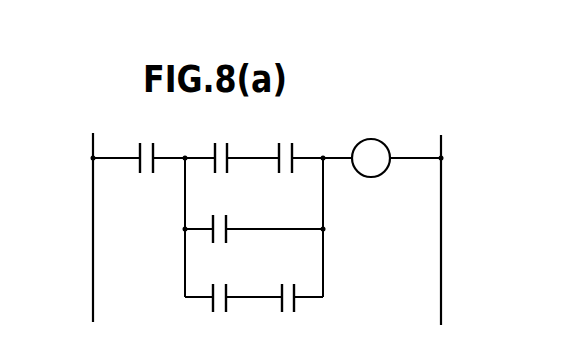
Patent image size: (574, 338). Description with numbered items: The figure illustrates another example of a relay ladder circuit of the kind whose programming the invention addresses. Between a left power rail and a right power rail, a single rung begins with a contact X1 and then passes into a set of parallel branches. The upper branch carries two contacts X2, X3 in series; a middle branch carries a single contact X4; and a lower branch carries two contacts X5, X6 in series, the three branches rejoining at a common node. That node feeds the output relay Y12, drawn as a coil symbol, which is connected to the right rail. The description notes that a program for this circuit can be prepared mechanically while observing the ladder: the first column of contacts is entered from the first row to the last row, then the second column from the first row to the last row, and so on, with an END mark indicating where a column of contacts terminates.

The input contact X1 is at (146, 145).
The input contact X2 is at (219, 145).
The input contact X3 is at (284, 145).
The input contact X4 is at (219, 215).
The input contact X5 is at (220, 285).
The input contact X6 is at (291, 285).
The output coil Y12 is at (371, 147).